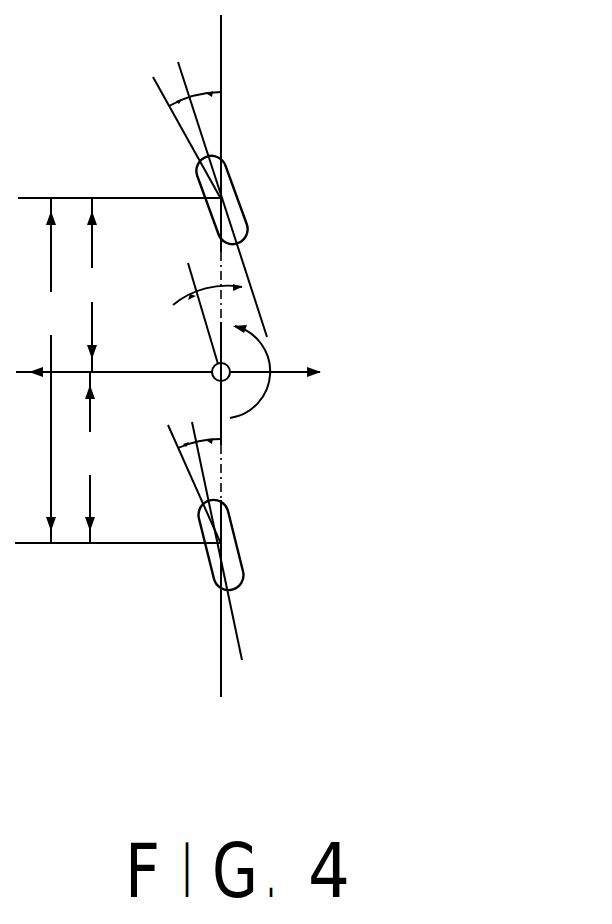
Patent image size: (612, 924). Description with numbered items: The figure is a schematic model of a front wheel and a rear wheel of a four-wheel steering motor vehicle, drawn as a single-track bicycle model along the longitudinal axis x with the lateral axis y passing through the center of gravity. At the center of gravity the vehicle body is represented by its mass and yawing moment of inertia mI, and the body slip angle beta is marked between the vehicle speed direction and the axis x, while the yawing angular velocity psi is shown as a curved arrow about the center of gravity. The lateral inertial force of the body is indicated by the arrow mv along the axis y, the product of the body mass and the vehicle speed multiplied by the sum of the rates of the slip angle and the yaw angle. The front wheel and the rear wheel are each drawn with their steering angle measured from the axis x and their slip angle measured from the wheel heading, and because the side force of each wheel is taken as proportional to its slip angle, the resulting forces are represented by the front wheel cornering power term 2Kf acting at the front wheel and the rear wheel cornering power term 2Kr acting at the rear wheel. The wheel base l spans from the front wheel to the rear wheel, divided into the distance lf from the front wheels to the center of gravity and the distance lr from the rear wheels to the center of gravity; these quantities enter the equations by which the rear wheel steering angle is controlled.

The front wheel cornering power 2Kf is at (255, 202).
The rear wheel cornering power 2Kr is at (251, 543).
The vehicle longitudinal axis x is at (231, 356).
The vehicle lateral axis y is at (114, 388).
The vehicle body mass and yawing moment of inertia mI is at (170, 364).
The wheel base l is at (118, 370).
The distance from front wheels to center of gravity lf is at (93, 285).
The distance from rear wheels to center of gravity lr is at (91, 457).
The slip angle of the vehicle body beta is at (206, 297).
The yawing angular velocity psi is at (260, 371).
The vehicle body mass times vehicle speed mv is at (352, 372).